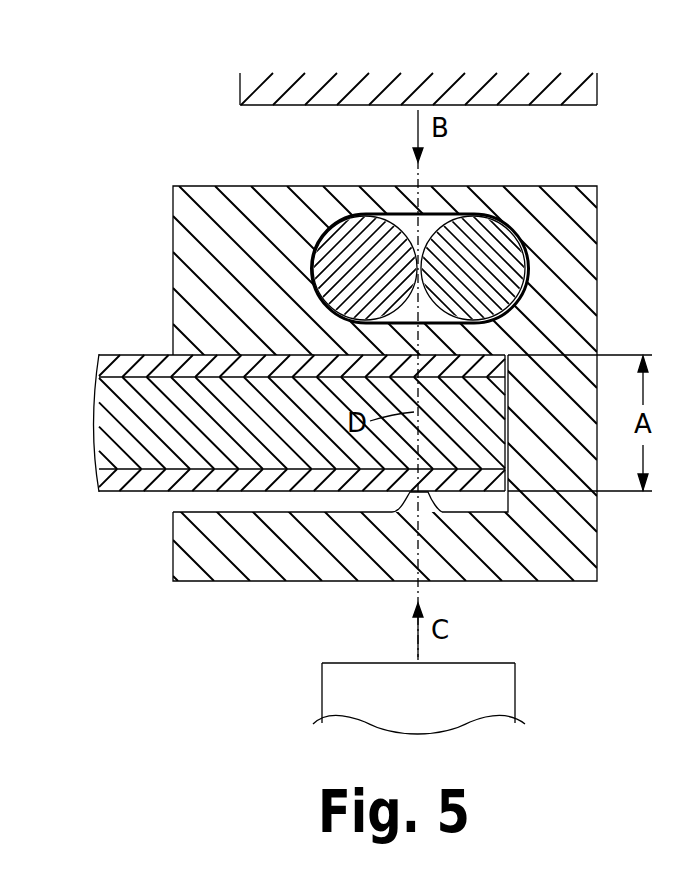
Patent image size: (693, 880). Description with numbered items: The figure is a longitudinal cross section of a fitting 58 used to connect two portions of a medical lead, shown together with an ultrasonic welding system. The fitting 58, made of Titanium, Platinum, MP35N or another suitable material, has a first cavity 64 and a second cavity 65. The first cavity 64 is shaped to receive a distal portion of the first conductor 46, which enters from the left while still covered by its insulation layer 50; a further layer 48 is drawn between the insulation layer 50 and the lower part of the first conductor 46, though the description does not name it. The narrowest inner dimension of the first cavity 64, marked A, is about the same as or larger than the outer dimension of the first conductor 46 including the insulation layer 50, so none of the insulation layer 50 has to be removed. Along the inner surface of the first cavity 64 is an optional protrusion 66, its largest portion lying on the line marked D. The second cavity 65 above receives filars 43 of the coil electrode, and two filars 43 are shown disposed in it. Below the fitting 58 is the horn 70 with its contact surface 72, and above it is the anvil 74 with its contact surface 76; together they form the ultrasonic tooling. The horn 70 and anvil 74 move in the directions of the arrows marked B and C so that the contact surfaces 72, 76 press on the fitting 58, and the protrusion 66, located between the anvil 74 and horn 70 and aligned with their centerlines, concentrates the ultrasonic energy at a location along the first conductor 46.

The filars 43 is at (348, 283).
The first conductor 46 is at (136, 450).
The middle insulating layer of flat cable 48 is at (122, 412).
The insulation layer 50 is at (144, 362).
The fitting 58 is at (582, 592).
The first cavity 64 is at (168, 502).
The second cavity 65 is at (428, 222).
The protrusion 66 is at (404, 507).
The horn 70 is at (398, 712).
The contact surface 72 is at (489, 652).
The anvil 74 is at (487, 88).
The contact surface 76 is at (338, 109).